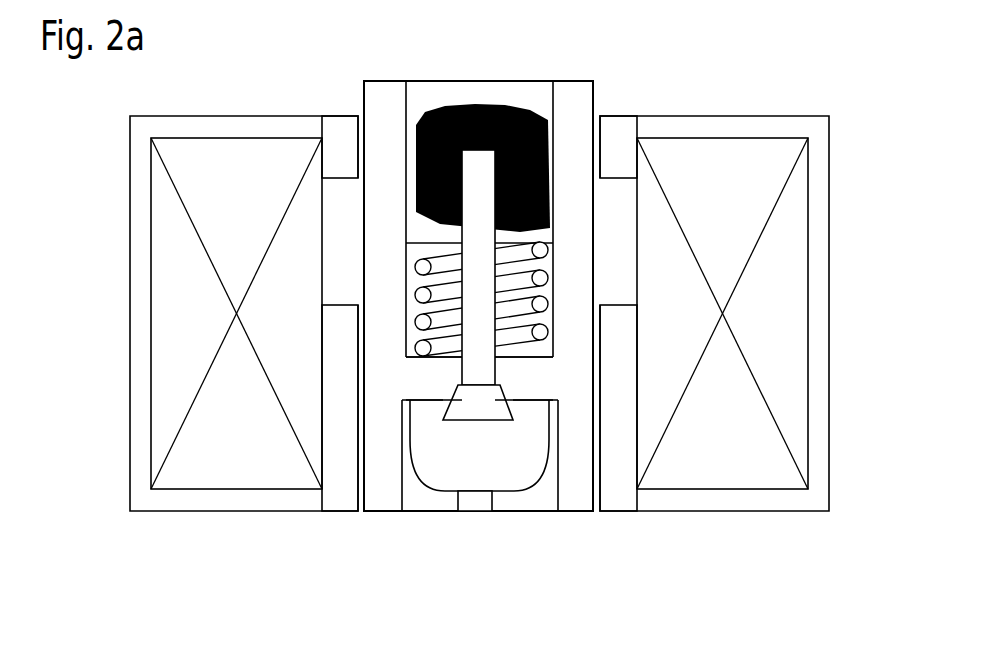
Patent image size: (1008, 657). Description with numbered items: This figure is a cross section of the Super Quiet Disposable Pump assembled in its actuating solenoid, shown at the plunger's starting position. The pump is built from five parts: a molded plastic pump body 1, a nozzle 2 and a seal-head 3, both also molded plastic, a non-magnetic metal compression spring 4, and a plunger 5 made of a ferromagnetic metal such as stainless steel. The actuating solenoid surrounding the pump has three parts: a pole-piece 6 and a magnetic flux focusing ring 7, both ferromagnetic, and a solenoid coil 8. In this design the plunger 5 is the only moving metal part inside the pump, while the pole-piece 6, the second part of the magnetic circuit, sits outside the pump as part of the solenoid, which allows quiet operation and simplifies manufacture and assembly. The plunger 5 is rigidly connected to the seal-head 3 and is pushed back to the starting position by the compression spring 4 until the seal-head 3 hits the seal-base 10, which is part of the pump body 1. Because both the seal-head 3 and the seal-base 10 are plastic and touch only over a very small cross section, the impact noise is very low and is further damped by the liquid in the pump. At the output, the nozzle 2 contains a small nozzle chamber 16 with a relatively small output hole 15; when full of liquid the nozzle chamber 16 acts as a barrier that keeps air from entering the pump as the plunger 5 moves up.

The pump body 1 is at (383, 132).
The nozzle 2 is at (410, 510).
The seal-head 3 is at (487, 434).
The compression spring 4 is at (562, 283).
The plunger 5 is at (514, 118).
The pole-piece 6 is at (323, 467).
The magnetic flux focusing ring 7 is at (342, 128).
The solenoid coil 8 is at (178, 279).
The seal-base 10 is at (527, 372).
The output hole 15 is at (473, 500).
The nozzle chamber 16 is at (484, 472).